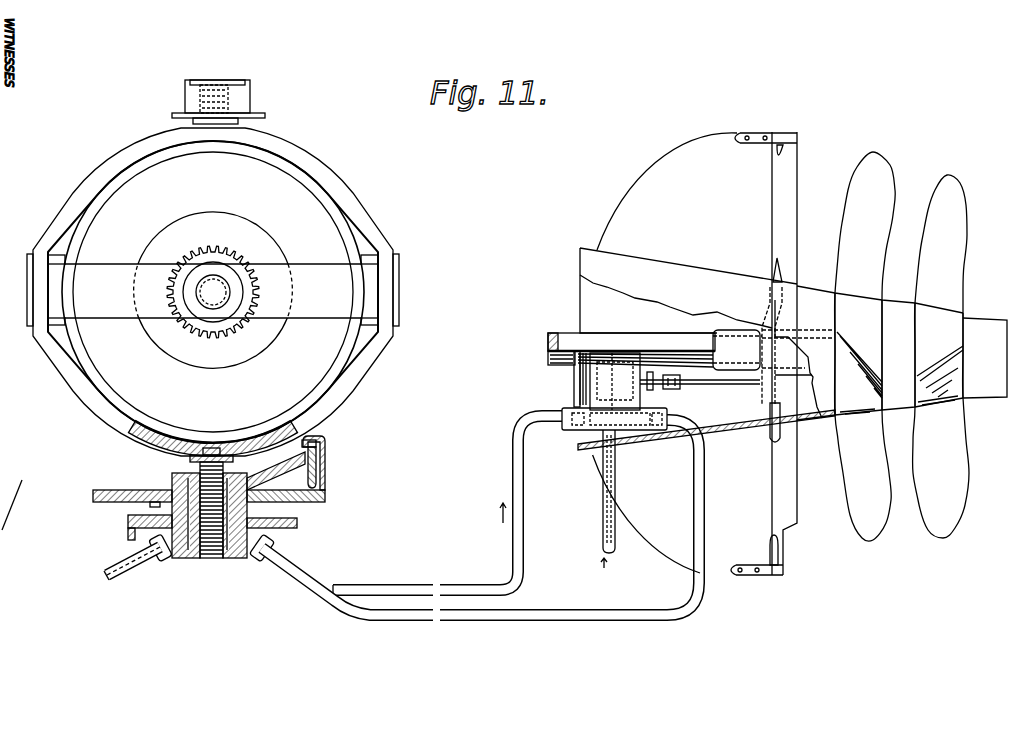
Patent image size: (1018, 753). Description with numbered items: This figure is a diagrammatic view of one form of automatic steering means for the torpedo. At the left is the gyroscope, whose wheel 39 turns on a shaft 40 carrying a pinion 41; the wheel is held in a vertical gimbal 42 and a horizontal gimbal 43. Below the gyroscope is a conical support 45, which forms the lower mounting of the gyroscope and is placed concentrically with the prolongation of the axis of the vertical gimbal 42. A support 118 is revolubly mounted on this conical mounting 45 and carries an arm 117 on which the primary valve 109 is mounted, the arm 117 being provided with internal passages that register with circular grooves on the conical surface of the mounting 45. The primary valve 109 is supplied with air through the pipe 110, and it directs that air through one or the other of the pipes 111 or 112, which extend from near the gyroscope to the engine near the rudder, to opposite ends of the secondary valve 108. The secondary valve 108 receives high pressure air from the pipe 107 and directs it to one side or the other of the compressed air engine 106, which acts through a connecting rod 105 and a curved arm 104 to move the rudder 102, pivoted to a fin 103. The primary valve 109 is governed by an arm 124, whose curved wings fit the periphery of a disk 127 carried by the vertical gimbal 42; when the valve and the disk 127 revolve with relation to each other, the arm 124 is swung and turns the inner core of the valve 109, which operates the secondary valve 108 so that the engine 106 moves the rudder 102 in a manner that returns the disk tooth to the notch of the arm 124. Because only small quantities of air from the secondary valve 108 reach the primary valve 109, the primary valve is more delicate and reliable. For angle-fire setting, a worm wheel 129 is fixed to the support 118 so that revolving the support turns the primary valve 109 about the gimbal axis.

The wheel 39 is at (213, 292).
The shaft 40 is at (215, 291).
The pinion 41 is at (235, 248).
The vertical gimbal 42 is at (364, 214).
The horizontal gimbal 43 is at (213, 290).
The conical support 45 is at (290, 511).
The rudder 102 is at (783, 205).
The fin 103 is at (688, 353).
The curved arm 104 is at (775, 390).
The connecting rod 105 is at (731, 382).
The compressed air engine 106 is at (597, 378).
The high pressure pipe 107 is at (634, 503).
The secondary valve 108 is at (570, 429).
The primary valve 109 is at (317, 472).
The pipe 110 is at (131, 567).
The pipe 111 is at (380, 587).
The pipe 112 is at (395, 613).
The arm 117 is at (325, 497).
The support 118 is at (170, 478).
The arm 124 is at (314, 438).
The disk 127 is at (140, 448).
The worm wheel 129 is at (93, 496).